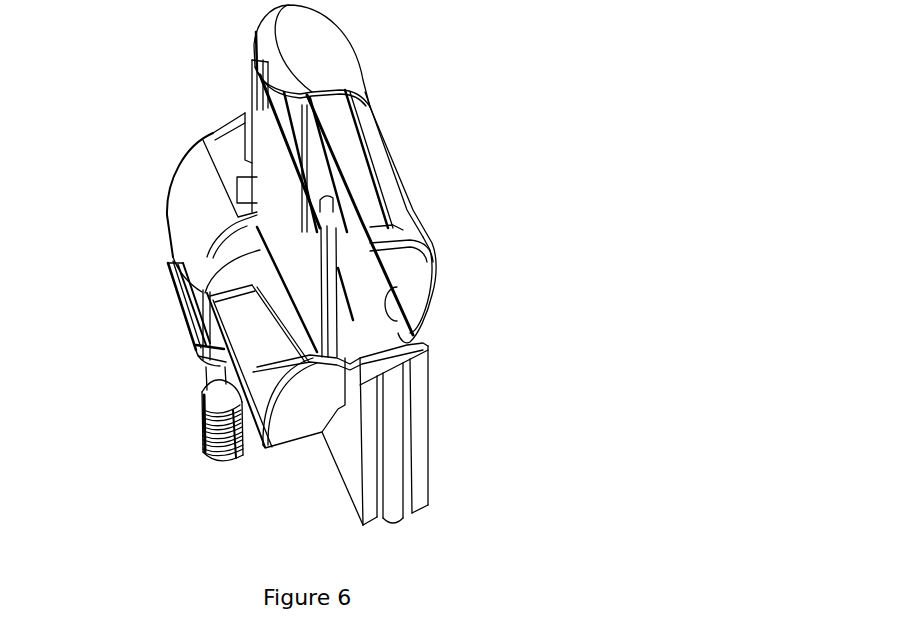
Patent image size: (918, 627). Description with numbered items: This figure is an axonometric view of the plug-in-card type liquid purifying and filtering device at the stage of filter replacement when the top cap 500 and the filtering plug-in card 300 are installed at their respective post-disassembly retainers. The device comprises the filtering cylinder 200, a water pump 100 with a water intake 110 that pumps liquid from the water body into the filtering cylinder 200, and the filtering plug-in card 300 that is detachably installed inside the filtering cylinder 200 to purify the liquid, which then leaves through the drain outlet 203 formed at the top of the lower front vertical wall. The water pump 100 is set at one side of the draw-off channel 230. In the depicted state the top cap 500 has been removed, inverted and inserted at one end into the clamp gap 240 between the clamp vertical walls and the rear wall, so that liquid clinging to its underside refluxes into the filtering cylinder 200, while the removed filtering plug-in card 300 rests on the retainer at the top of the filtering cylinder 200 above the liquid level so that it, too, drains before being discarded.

The water pump 100 is at (163, 293).
The water intake 110 is at (197, 445).
The filtering cylinder 200 is at (443, 460).
The drain outlet 203 is at (280, 292).
The draw-off channel 230 is at (298, 460).
The clamp gap 240 is at (399, 288).
The filtering plug-in card 300 is at (278, 175).
The top cap 500 is at (400, 178).